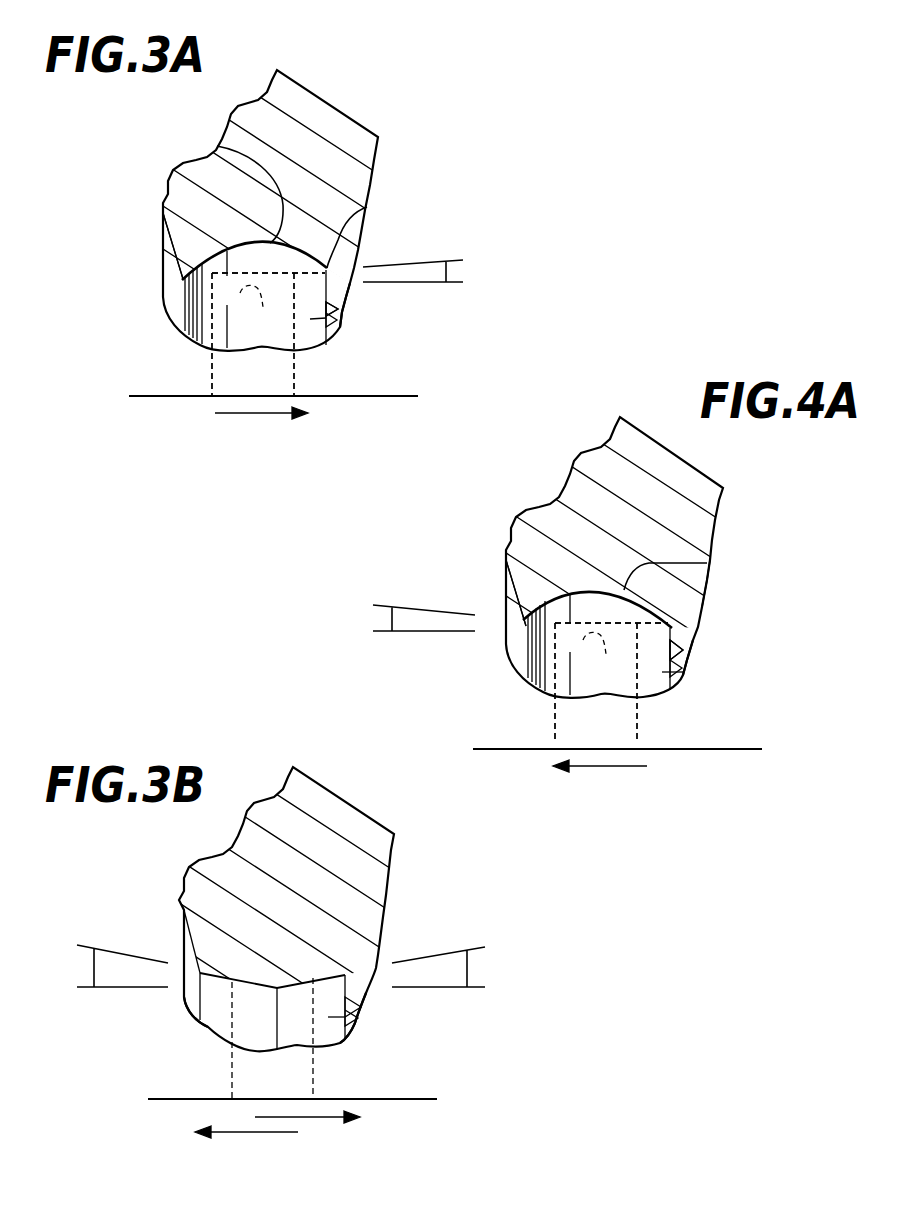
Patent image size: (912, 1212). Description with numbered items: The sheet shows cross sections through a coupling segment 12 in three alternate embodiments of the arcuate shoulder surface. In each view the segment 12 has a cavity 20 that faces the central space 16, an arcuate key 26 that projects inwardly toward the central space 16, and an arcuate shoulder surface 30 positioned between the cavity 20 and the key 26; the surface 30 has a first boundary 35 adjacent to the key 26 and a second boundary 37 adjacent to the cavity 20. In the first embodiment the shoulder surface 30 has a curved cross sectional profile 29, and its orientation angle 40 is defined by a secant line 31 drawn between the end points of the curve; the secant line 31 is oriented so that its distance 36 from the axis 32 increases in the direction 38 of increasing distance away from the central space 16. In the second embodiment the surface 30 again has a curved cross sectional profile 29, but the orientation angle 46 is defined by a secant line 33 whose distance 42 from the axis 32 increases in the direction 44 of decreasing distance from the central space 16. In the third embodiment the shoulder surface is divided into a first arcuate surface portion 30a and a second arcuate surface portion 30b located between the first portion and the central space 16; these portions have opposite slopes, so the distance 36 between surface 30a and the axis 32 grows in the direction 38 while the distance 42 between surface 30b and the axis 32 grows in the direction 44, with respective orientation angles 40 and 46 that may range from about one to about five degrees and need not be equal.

In FIG. 3A, the segment 12 is at (332, 107).
In FIG. 4A, the segment 12 is at (703, 533).
In FIG. 3B, the segment 12 is at (350, 805).
In FIG. 3A, the central space 16 is at (100, 301).
In FIG. 4A, the central space 16 is at (409, 695).
In FIG. 3B, the central space 16 is at (43, 1030).
In FIG. 3A, the cavity 20 is at (173, 300).
In FIG. 4A, the cavity 20 is at (507, 593).
In FIG. 3B, the cavity 20 is at (192, 997).
In FIG. 3A, the arcuate key 26 is at (342, 302).
In FIG. 4A, the arcuate key 26 is at (684, 650).
In FIG. 3A, the curved cross sectional profile 29 is at (227, 142).
In FIG. 4A, the curved cross sectional profile 29 is at (707, 563).
In FIG. 3A, the arcuate shoulder surface 30 is at (340, 330).
In FIG. 4A, the arcuate shoulder surface 30 is at (683, 677).
In FIG. 3B, the first arcuate surface portion 30a is at (357, 1023).
In FIG. 3B, the second arcuate surface portion 30b is at (208, 1017).
In FIG. 3A, the secant line 31 is at (268, 334).
In FIG. 3A, the axis 32 is at (395, 397).
In FIG. 4A, the axis 32 is at (745, 750).
In FIG. 3B, the axis 32 is at (413, 1100).
In FIG. 4A, the secant line 33 is at (611, 683).
In FIG. 3A, the first boundary 35 is at (360, 227).
In FIG. 4A, the first boundary 35 is at (688, 622).
In FIG. 3A, the distance 36 is at (210, 348).
In FIG. 3B, the distance 36 is at (313, 1054).
In FIG. 3A, the second boundary 37 is at (165, 283).
In FIG. 4A, the second boundary 37 is at (503, 620).
In FIG. 3A, the direction 38 is at (255, 414).
In FIG. 3B, the direction 38 is at (307, 1118).
In FIG. 3A, the orientation angle 40 is at (446, 270).
In FIG. 3B, the orientation angle 40 is at (467, 970).
In FIG. 4A, the distance 42 is at (557, 730).
In FIG. 3B, the distance 42 is at (232, 1052).
In FIG. 4A, the direction 44 is at (592, 768).
In FIG. 3B, the direction 44 is at (248, 1133).
In FIG. 4A, the orientation angle 46 is at (392, 618).
In FIG. 3B, the orientation angle 46 is at (94, 972).